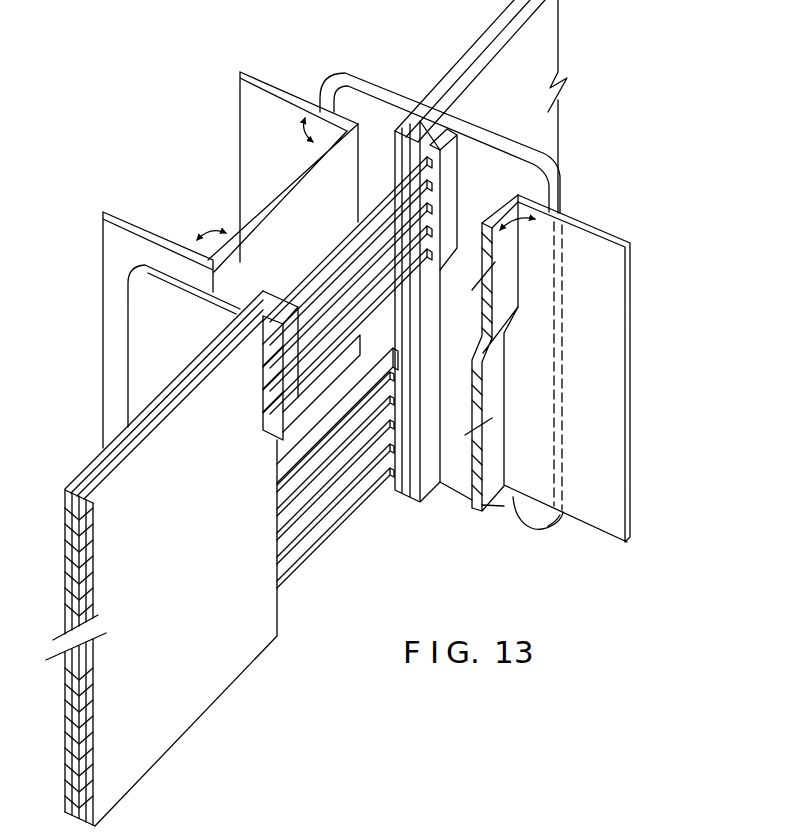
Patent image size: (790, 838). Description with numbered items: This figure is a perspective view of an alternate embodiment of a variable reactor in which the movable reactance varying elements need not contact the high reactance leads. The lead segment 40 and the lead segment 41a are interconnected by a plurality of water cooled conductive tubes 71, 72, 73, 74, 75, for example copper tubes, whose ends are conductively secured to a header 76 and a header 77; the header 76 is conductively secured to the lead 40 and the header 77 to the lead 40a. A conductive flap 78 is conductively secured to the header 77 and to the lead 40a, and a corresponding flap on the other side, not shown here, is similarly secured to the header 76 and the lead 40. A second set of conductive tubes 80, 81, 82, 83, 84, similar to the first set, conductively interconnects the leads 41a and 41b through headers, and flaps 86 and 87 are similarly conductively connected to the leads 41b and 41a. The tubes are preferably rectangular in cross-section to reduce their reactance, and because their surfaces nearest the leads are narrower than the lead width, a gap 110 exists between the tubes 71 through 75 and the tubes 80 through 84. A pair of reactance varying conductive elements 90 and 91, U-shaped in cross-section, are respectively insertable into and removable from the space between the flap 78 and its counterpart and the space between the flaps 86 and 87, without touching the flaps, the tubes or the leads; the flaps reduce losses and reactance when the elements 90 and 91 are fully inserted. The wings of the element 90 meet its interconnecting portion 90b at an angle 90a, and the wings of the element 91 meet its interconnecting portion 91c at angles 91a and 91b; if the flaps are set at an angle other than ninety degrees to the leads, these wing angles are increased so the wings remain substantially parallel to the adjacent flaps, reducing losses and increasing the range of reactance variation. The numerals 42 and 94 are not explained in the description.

The lead segment 40 is at (203, 705).
The lead 40a is at (553, 136).
The lead segment 41a is at (83, 473).
The lead 41b is at (458, 68).
The board laminate section 42 is at (76, 572).
The conductive tube 71 is at (321, 270).
The conductive tube 72 is at (266, 370).
The conductive tube 73 is at (266, 400).
The conductive tube 74 is at (266, 426).
The conductive tube 75 is at (405, 279).
The header 76 is at (265, 338).
The header 77 is at (453, 153).
The conductive flap 78 is at (561, 190).
The conductive tube 80 is at (282, 490).
The conductive tube 81 is at (282, 514).
The conductive tube 82 is at (282, 537).
The conductive tube 83 is at (282, 561).
The conductive tube 84 is at (282, 583).
The flap 86 is at (393, 100).
The flap 87 is at (137, 283).
The reactance varying conductive element 90 is at (627, 402).
The wing angle 90a is at (523, 223).
The interconnecting portion 90b is at (495, 214).
The reactance varying conductive element 91 is at (248, 97).
The wing angle 91a is at (306, 130).
The wing angle 91b is at (197, 221).
The interconnecting portion 91c is at (268, 206).
The element 94 is at (658, 830).
The gap 110 is at (290, 452).